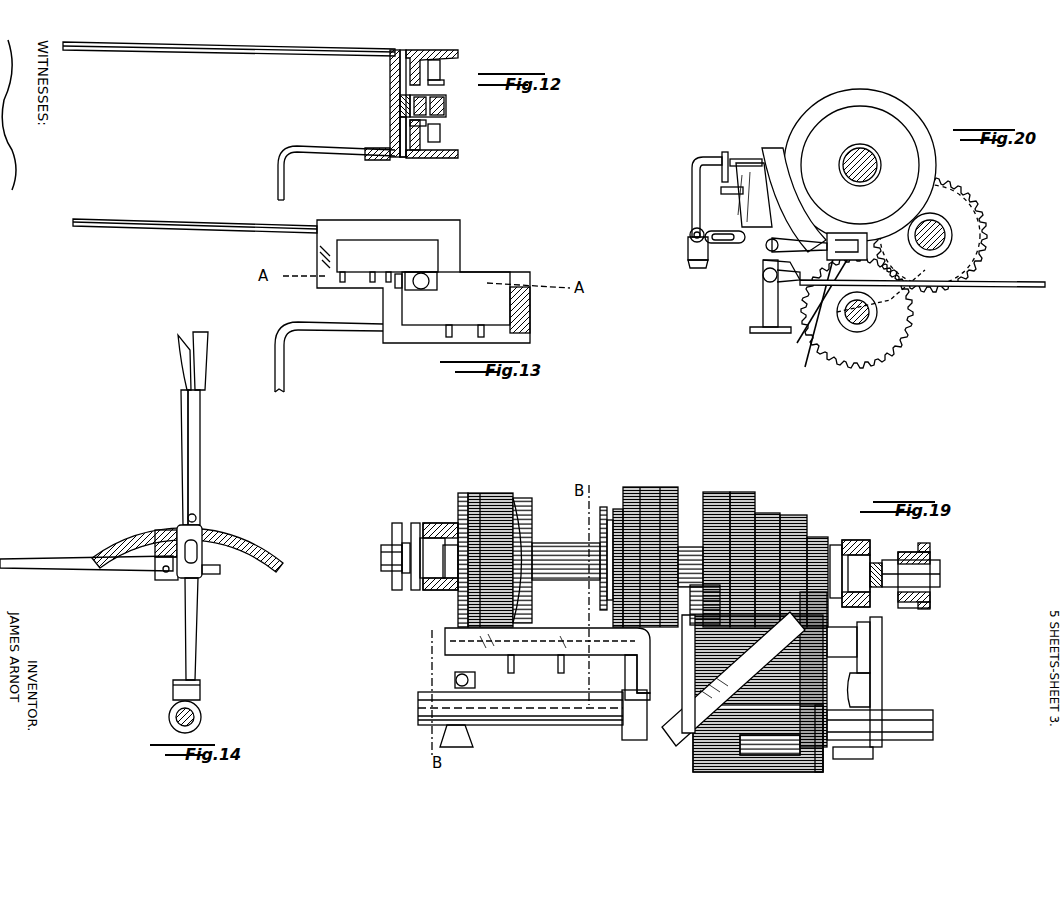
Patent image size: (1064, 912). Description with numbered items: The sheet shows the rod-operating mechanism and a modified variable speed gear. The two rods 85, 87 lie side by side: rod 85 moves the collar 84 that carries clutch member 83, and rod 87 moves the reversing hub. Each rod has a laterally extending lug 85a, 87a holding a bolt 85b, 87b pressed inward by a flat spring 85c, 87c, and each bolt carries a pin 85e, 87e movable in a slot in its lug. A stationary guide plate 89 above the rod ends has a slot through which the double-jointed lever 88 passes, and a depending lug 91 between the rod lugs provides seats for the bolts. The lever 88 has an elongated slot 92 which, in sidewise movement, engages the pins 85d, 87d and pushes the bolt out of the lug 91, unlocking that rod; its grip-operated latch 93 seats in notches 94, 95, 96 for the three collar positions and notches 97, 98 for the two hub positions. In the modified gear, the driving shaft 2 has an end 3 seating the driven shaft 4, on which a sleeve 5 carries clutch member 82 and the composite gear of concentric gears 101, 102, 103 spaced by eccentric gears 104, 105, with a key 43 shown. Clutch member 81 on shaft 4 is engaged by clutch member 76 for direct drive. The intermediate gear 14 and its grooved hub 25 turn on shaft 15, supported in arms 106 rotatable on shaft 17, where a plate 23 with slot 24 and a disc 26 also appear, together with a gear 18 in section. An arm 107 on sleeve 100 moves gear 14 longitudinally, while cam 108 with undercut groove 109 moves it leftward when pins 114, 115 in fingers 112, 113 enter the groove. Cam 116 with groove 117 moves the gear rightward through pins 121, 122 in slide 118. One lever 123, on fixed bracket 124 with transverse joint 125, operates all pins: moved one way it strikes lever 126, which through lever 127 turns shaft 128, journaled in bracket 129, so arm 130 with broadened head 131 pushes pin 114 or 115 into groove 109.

In FIG. 19, the driving shaft 2 is at (940, 575).
In FIG. 19, the end of driving shaft 3 is at (879, 587).
In FIG. 19, the driven shaft 4 is at (836, 545).
In FIG. 19, the sleeve 5 is at (558, 543).
In FIG. 20, the intermediate gear 14 is at (975, 222).
In FIG. 19, the intermediate gear 14 is at (800, 640).
In FIG. 20, the shaft 15 is at (936, 226).
In FIG. 19, the shaft 15 is at (885, 650).
In FIG. 20, the shaft 17 is at (858, 320).
In FIG. 19, the shaft 17 is at (568, 727).
In FIG. 20, the gear drum 18 is at (902, 338).
In FIG. 19, the gear drum 18 is at (768, 772).
In FIG. 19, the plate 23 is at (852, 752).
In FIG. 19, the slot 24 is at (818, 773).
In FIG. 19, the grooved hub 25 is at (885, 635).
In FIG. 19, the disc 26 is at (885, 668).
In FIG. 19, the key 43 is at (448, 598).
In FIG. 19, the clutch member 76 is at (910, 550).
In FIG. 19, the clutch member 81 is at (860, 546).
In FIG. 19, the clutch member 82 is at (445, 523).
In FIG. 19, the clutch member 83 is at (412, 592).
In FIG. 19, the collar 84 is at (396, 572).
In FIG. 12, the rod 85 is at (222, 56).
In FIG. 13, the rod 85 is at (217, 228).
In FIG. 14, the rod 85 is at (92, 572).
In FIG. 12, the lug 85a is at (394, 74).
In FIG. 12, the bolt 85b is at (406, 70).
In FIG. 12, the flat spring 85c is at (388, 50).
In FIG. 12, the pin 85d is at (445, 77).
In FIG. 14, the pin 85d is at (208, 574).
In FIG. 12, the pin 85e is at (440, 72).
In FIG. 12, the rod 87 is at (286, 182).
In FIG. 13, the rod 87 is at (330, 331).
In FIG. 12, the lug 87a is at (396, 128).
In FIG. 12, the bolt 87b is at (408, 150).
In FIG. 12, the flat spring 87c is at (386, 160).
In FIG. 12, the pin 87d is at (442, 132).
In FIG. 12, the pin 87e is at (428, 122).
In FIG. 12, the lever 88 is at (447, 104).
In FIG. 13, the lever 88 is at (437, 287).
In FIG. 14, the lever 88 is at (201, 466).
In FIG. 13, the guide plate 89 is at (455, 236).
In FIG. 14, the guide plate 89 is at (262, 548).
In FIG. 12, the depending lug 91 is at (398, 104).
In FIG. 13, the depending lug 91 is at (393, 284).
In FIG. 14, the depending lug 91 is at (160, 566).
In FIG. 14, the elongated slot 92 is at (200, 556).
In FIG. 14, the grip-operated latch 93 is at (176, 522).
In FIG. 13, the notch 94 is at (392, 272).
In FIG. 14, the notch 94 is at (155, 528).
In FIG. 13, the notch 95 is at (383, 265).
In FIG. 14, the notch 95 is at (150, 545).
In FIG. 13, the notch 96 is at (349, 265).
In FIG. 14, the notch 96 is at (112, 548).
In FIG. 13, the notch 97 is at (448, 319).
In FIG. 13, the notch 98 is at (488, 319).
In FIG. 19, the sleeve 100 is at (622, 736).
In FIG. 19, the concentric gear 101 is at (820, 537).
In FIG. 19, the concentric gear 102 is at (768, 513).
In FIG. 19, the concentric gear 103 is at (718, 492).
In FIG. 19, the eccentric gear 104 is at (795, 515).
In FIG. 19, the eccentric gear 105 is at (745, 492).
In FIG. 20, the arms 106 is at (925, 290).
In FIG. 19, the arms 106 is at (686, 735).
In FIG. 19, the arm 107 is at (733, 679).
In FIG. 20, the cam 108 is at (910, 118).
In FIG. 19, the cam 108 is at (668, 487).
In FIG. 19, the undercut groove 109 is at (640, 492).
In FIG. 20, the finger 112 is at (775, 145).
In FIG. 19, the finger 112 is at (636, 650).
In FIG. 20, the finger 113 is at (760, 200).
In FIG. 19, the finger 113 is at (696, 605).
In FIG. 20, the pin 114 is at (738, 158).
In FIG. 20, the pin 115 is at (730, 200).
In FIG. 19, the cam 116 is at (495, 493).
In FIG. 19, the groove 117 is at (466, 492).
In FIG. 20, the slide 118 is at (858, 243).
In FIG. 19, the slide 118 is at (533, 640).
In FIG. 20, the pin 121 is at (822, 292).
In FIG. 19, the pin 121 is at (510, 673).
In FIG. 20, the pin 122 is at (810, 313).
In FIG. 19, the pin 122 is at (561, 673).
In FIG. 20, the lever 123 is at (922, 272).
In FIG. 19, the lever 123 is at (455, 680).
In FIG. 20, the fixed bracket 124 is at (763, 309).
In FIG. 19, the fixed bracket 124 is at (470, 735).
In FIG. 20, the transverse joint 125 is at (794, 283).
In FIG. 20, the lever 126 is at (768, 255).
In FIG. 20, the lever 127 is at (728, 244).
In FIG. 20, the shaft 128 is at (689, 237).
In FIG. 19, the shaft 128 is at (568, 640).
In FIG. 20, the fixed bracket 129 is at (693, 262).
In FIG. 20, the arm 130 is at (690, 183).
In FIG. 20, the broadened head 131 is at (720, 158).